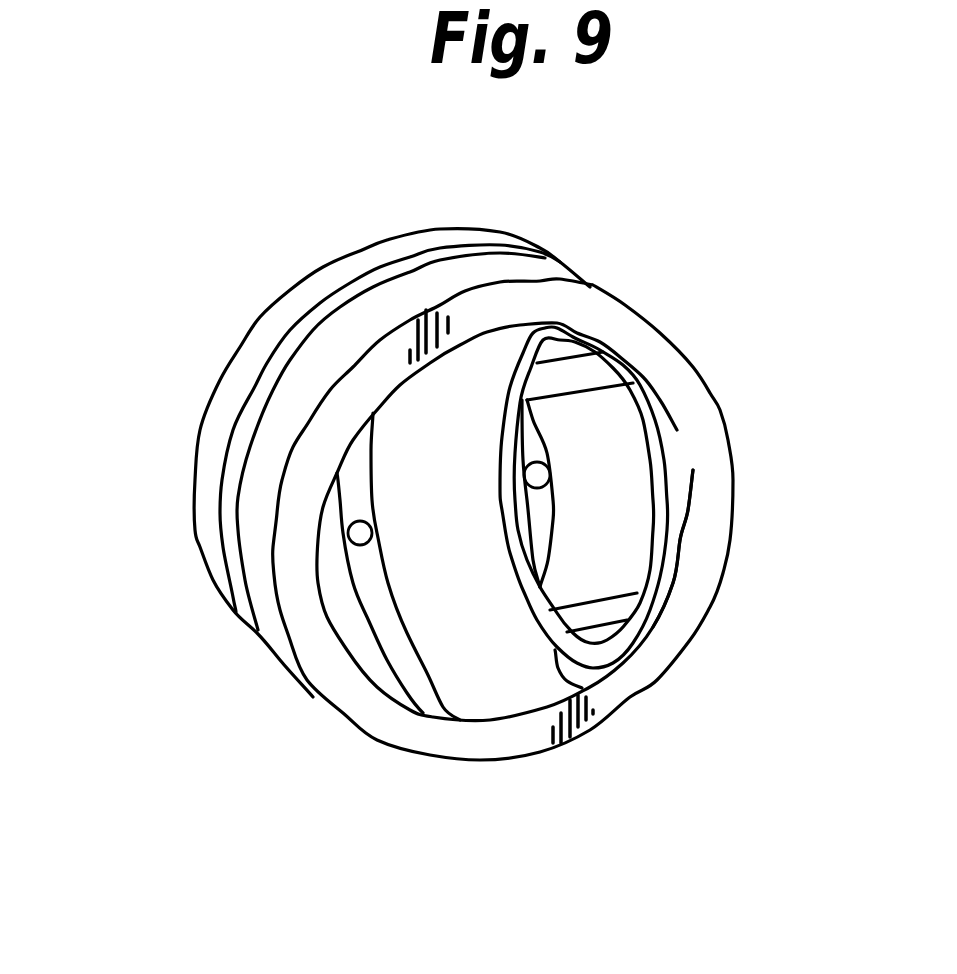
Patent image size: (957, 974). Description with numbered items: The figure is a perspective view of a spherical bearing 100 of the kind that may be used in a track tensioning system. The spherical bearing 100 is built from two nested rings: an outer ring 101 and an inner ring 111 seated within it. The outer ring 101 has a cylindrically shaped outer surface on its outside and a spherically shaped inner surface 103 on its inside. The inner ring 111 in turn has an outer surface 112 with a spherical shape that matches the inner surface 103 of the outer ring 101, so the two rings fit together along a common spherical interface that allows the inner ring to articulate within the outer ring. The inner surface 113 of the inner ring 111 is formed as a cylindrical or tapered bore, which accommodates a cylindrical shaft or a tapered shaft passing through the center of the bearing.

The spherical bearing 100 is at (451, 539).
The outer ring 101 is at (550, 747).
The inner surface of the outer ring 103 is at (673, 543).
The inner ring 111 is at (582, 688).
The outer surface of the inner ring 112 is at (480, 660).
The inner surface of the inner ring 113 is at (617, 485).